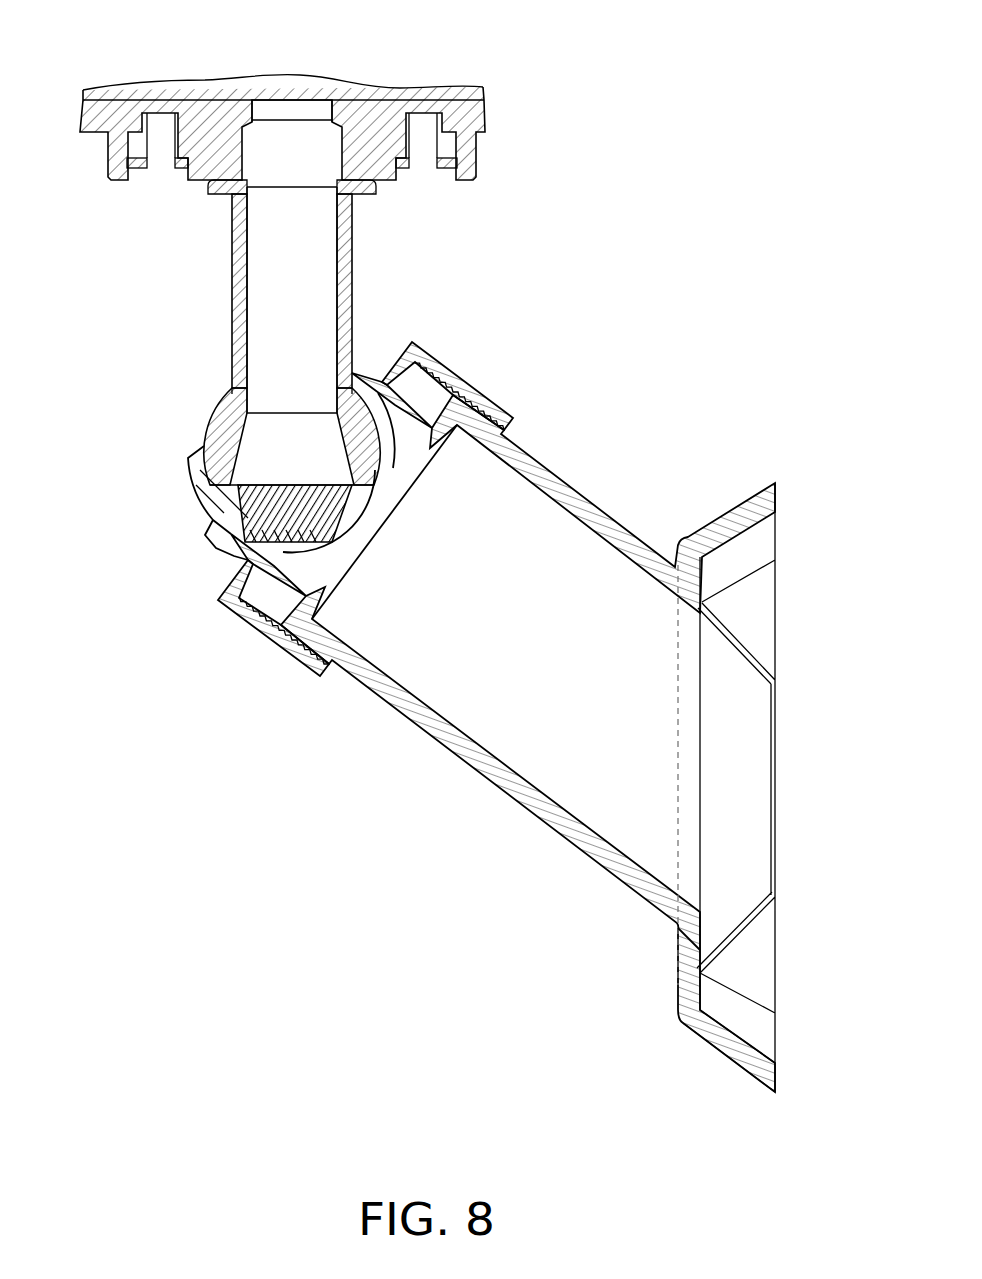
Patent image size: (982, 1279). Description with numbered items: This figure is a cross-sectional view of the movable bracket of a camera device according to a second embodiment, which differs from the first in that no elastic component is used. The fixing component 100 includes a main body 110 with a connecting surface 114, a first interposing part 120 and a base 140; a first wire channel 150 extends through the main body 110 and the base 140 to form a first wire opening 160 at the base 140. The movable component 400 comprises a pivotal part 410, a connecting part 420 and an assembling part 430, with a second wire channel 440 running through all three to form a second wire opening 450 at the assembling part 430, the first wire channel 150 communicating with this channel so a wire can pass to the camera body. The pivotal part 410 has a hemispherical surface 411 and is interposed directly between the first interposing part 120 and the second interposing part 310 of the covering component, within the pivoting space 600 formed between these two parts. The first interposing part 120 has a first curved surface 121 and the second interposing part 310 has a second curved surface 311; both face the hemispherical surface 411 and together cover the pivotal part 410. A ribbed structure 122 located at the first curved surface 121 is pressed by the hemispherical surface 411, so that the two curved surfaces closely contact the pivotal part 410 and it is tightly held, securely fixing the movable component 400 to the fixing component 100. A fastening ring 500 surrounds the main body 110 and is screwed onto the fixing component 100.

The fixing component 100 is at (509, 734).
The main body 110 is at (445, 738).
The connecting surface 114 is at (674, 912).
The first interposing part 120 is at (350, 600).
The first curved surface 121 is at (228, 555).
The ribbed structure 122 is at (325, 535).
The base 140 is at (722, 1052).
The first wire channel 150 is at (540, 553).
The first wire opening 160 is at (766, 745).
The second interposing part 310 is at (222, 480).
The second curved surface 311 is at (245, 462).
The movable component 400 is at (322, 296).
The pivotal part 410 is at (236, 437).
The hemispherical surface 411 is at (193, 420).
The connecting part 420 is at (233, 210).
The assembling part 430 is at (128, 168).
The second wire channel 440 is at (300, 283).
The second wire opening 450 is at (303, 99).
The fastening ring 500 is at (264, 652).
The pivoting space 600 is at (232, 505).